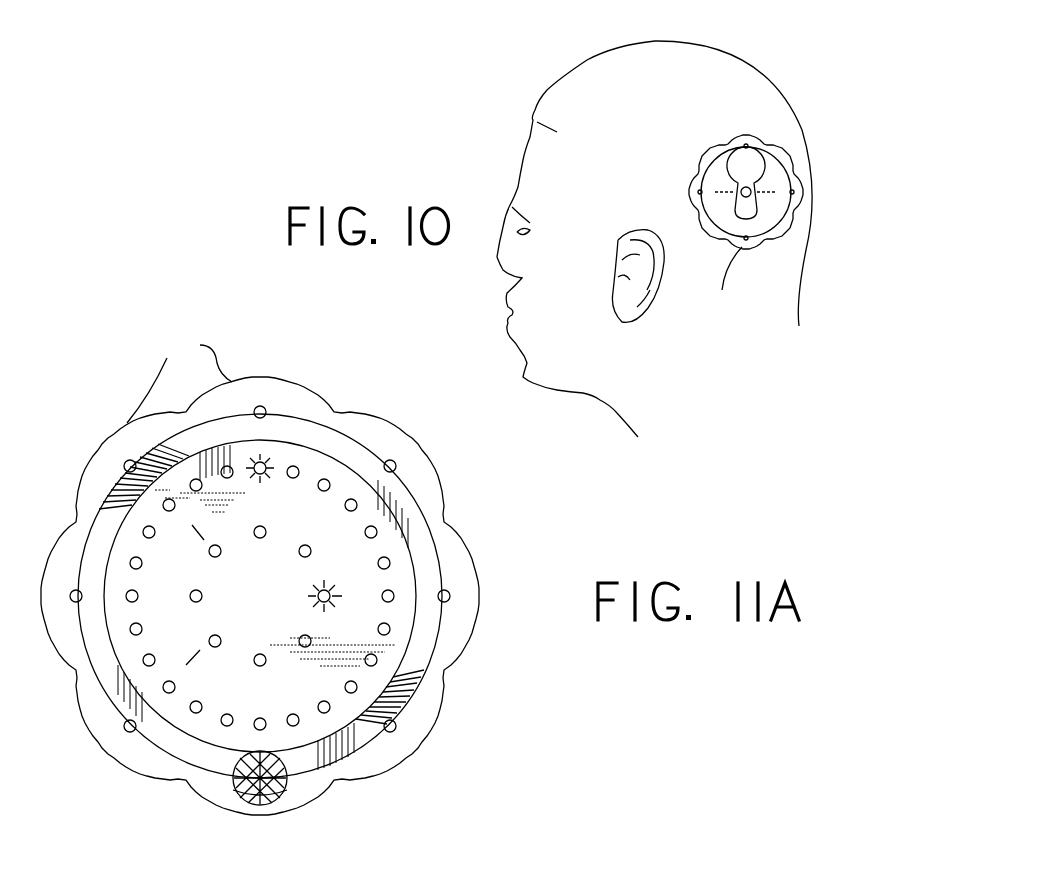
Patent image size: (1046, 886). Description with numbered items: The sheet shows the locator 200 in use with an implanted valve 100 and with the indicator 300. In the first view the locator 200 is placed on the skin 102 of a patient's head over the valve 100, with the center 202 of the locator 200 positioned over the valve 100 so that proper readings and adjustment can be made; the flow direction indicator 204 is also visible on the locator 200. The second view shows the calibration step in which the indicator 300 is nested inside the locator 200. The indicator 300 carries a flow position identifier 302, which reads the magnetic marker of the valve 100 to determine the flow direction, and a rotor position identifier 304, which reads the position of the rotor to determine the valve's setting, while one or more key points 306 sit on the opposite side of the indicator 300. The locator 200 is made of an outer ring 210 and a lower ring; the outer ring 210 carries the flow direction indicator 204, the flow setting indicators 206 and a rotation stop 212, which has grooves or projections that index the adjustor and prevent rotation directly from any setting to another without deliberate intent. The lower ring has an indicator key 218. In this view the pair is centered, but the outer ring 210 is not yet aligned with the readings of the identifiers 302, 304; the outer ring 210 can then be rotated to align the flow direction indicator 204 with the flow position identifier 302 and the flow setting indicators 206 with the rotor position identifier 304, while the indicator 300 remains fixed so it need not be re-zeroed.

In FIG. 10, the valve 100 is at (751, 168).
In FIG. 10, the skin 102 is at (744, 81).
In FIG. 10, the locator 200 is at (784, 234).
In FIG. 11A, the locator 200 is at (475, 555).
In FIG. 10, the center 202 is at (737, 191).
In FIG. 10, the flow direction indicator 204 is at (730, 289).
In FIG. 11A, the flow direction indicator 204 is at (43, 600).
In FIG. 11A, the flow setting indicators 206 is at (179, 376).
In FIG. 11A, the outer ring 210 is at (428, 487).
In FIG. 11A, the rotation stop 212 is at (424, 716).
In FIG. 11A, the indicator key 218 is at (247, 787).
In FIG. 11A, the indicator 300 is at (416, 671).
In FIG. 11A, the flow position identifier 302 is at (274, 461).
In FIG. 11A, the rotor position identifier 304 is at (315, 607).
In FIG. 11A, the key points 306 is at (290, 783).